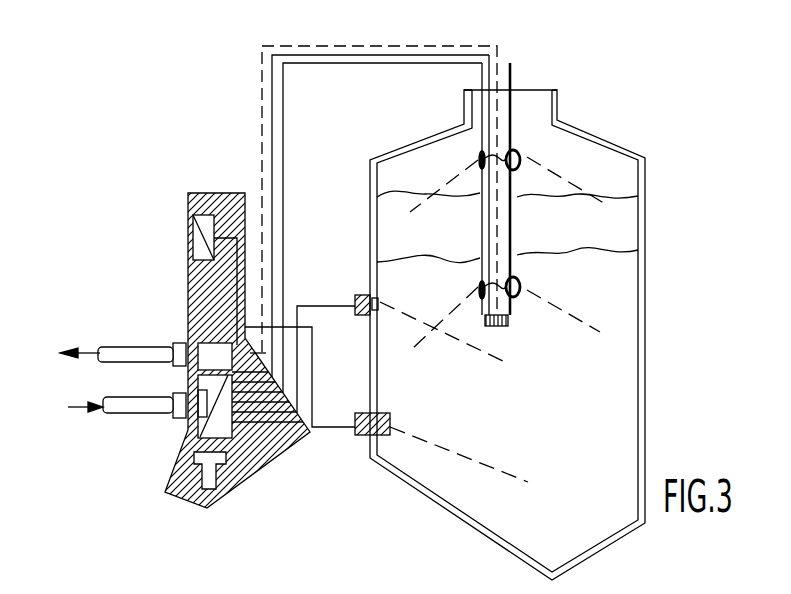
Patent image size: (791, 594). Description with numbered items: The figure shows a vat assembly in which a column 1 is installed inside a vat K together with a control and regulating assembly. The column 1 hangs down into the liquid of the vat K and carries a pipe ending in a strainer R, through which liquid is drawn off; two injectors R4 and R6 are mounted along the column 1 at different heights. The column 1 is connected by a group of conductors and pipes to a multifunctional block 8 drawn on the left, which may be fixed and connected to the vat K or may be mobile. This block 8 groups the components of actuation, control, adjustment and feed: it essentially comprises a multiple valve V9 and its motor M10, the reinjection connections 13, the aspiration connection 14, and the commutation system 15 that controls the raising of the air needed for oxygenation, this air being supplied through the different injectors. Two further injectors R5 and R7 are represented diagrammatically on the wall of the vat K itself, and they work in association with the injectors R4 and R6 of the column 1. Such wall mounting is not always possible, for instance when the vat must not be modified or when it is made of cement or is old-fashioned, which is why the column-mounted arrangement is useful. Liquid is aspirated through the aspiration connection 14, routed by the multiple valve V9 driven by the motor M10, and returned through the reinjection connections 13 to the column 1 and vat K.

The column 1 is at (512, 82).
The multifunctional block 8 is at (222, 193).
The reinjection connections 13 is at (197, 420).
The aspiration connection 14 is at (207, 343).
The commutation system 15 is at (196, 240).
The vat K is at (645, 400).
The motor M10 is at (216, 489).
The strainer R is at (505, 326).
The injector R4 is at (525, 283).
The injector R5 is at (362, 315).
The injector R6 is at (522, 157).
The injector R7 is at (362, 435).
The multiple valve V9 is at (258, 452).